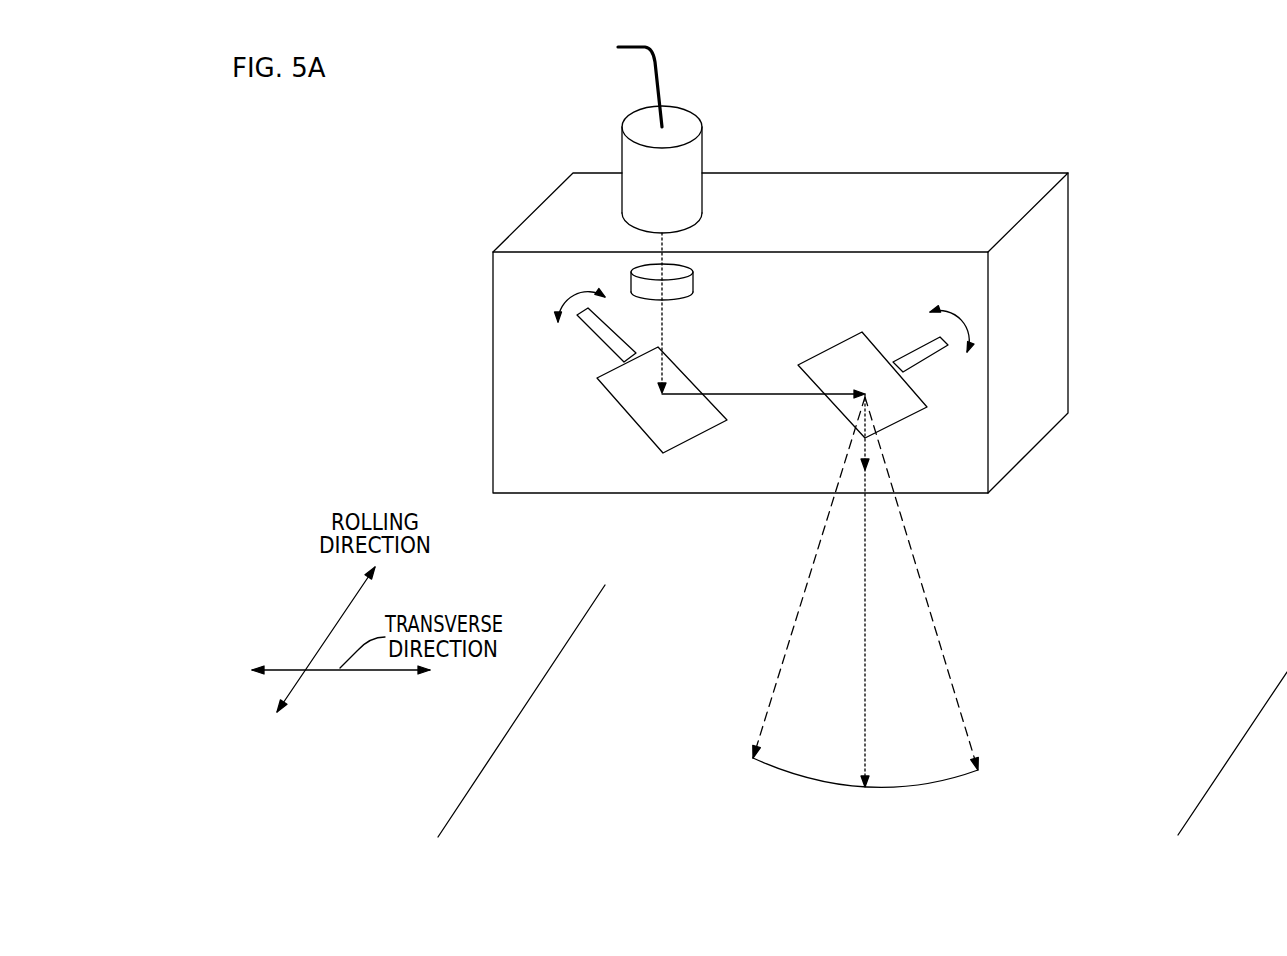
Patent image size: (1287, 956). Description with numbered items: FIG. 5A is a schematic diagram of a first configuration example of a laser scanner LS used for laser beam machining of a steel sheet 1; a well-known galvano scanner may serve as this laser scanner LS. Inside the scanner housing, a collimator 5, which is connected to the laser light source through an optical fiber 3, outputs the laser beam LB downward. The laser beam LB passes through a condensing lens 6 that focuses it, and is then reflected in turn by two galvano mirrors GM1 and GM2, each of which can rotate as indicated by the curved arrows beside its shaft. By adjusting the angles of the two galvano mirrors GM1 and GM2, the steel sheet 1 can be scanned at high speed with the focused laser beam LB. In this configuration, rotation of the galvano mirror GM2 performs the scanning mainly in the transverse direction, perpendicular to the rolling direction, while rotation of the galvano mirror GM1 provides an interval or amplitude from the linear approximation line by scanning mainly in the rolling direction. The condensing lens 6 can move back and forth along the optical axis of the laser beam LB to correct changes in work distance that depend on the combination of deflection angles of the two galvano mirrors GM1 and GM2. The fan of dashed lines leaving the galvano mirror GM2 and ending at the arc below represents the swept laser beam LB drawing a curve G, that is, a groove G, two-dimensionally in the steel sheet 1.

The steel sheet 1 is at (525, 743).
The optical fiber 3 is at (653, 72).
The collimator 5 is at (703, 144).
The condensing lens 6 is at (693, 281).
The laser scanner LS is at (533, 212).
The galvano mirror GM1 is at (632, 418).
The galvano mirror GM2 is at (830, 347).
The laser beam LB is at (760, 395).
The curve G is at (953, 778).